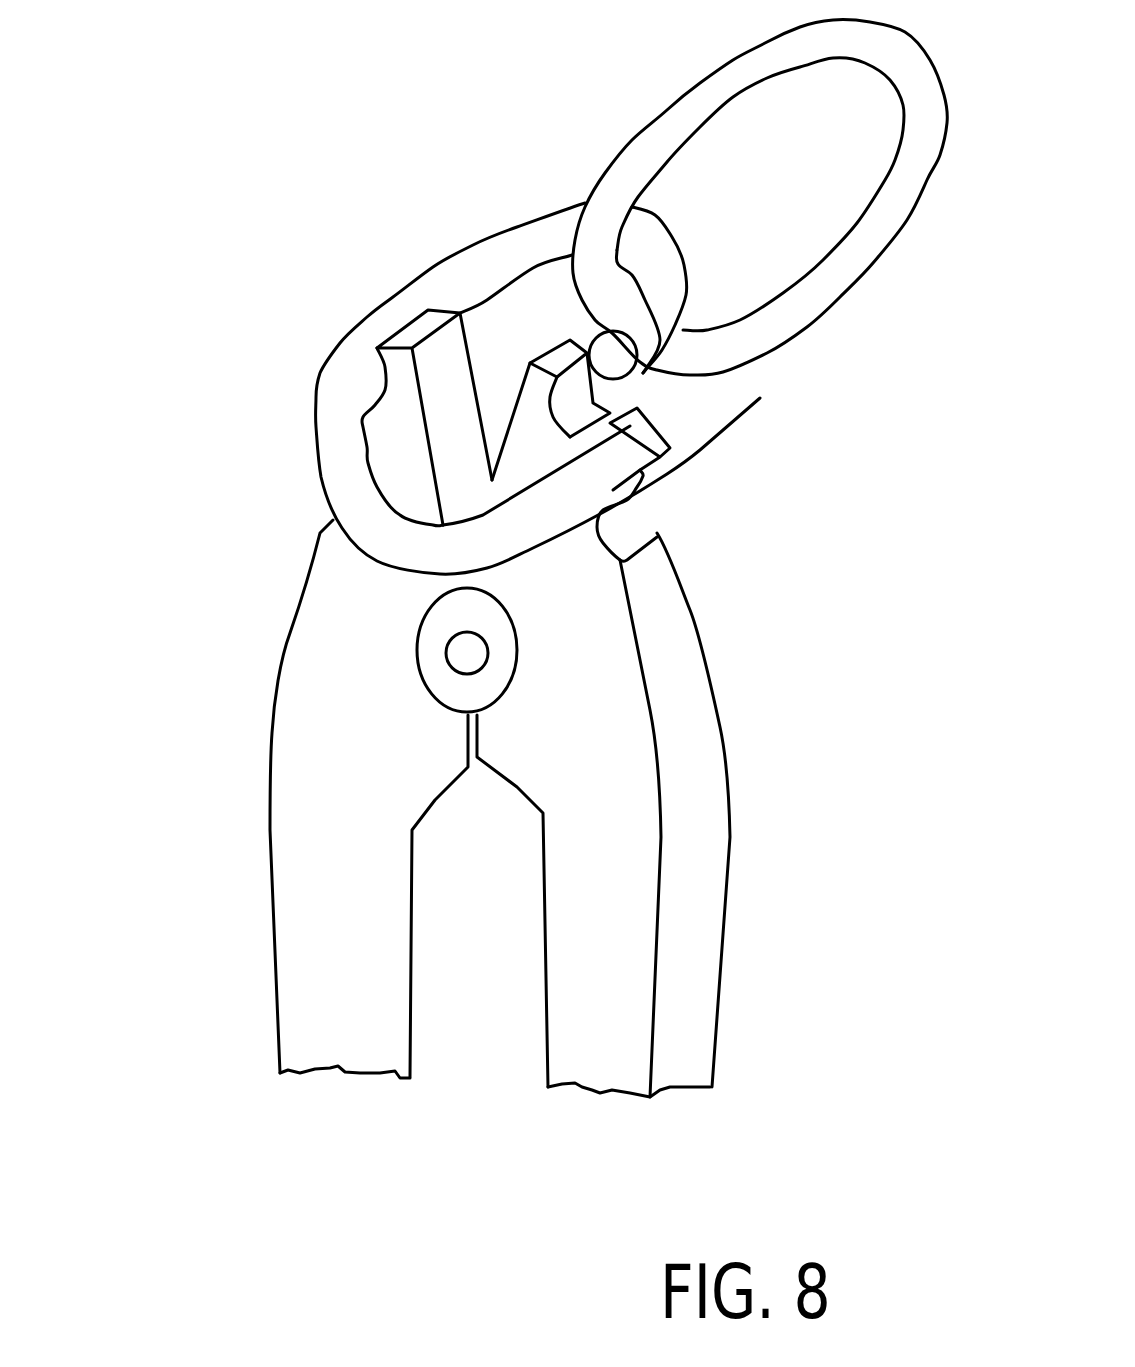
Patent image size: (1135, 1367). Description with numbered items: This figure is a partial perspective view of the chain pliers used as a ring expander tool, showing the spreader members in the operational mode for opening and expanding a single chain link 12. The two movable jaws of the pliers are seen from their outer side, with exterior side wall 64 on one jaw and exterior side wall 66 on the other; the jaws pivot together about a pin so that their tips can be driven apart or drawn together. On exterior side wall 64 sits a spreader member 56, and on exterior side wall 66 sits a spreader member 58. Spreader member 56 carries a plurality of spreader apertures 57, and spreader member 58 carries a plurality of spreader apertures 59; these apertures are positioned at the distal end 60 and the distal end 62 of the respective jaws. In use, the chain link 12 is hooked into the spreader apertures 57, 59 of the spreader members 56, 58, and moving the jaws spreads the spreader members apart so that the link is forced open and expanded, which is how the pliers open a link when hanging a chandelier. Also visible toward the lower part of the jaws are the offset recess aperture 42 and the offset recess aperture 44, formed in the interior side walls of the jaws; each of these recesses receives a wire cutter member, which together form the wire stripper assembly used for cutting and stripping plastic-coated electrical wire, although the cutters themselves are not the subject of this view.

The chain link 12 is at (648, 151).
The offset recess aperture 42 is at (450, 947).
The offset recess aperture 44 is at (517, 953).
The spreader member 56 is at (310, 510).
The spreader apertures 57 is at (365, 444).
The spreader member 58 is at (635, 527).
The spreader apertures 59 is at (600, 427).
The distal end 60 is at (398, 315).
The distal end 62 is at (570, 347).
The exterior side wall 64 is at (270, 742).
The exterior side wall 66 is at (697, 787).